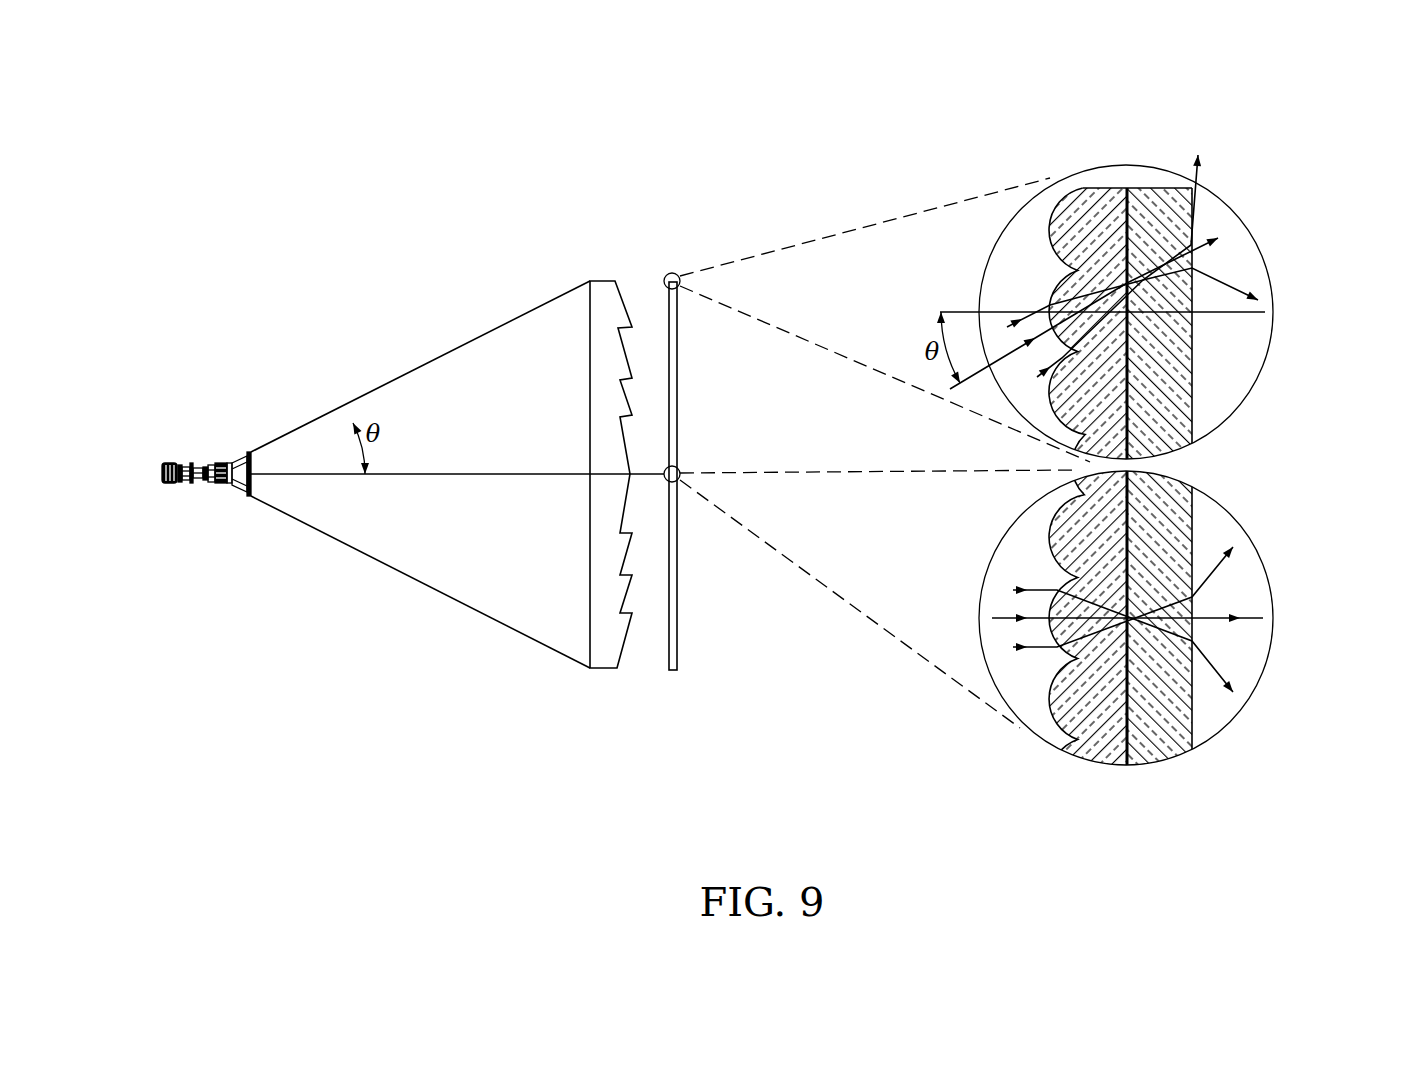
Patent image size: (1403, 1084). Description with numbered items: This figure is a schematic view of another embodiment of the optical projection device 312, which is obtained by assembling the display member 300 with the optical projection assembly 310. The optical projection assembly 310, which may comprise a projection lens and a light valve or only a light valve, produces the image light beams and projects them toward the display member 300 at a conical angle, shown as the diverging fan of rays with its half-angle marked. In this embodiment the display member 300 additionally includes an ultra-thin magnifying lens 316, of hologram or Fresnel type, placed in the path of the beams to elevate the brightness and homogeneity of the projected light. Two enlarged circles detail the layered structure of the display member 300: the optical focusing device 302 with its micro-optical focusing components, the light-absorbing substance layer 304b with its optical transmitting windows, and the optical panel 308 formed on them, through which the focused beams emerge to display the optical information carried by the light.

The display member 300 is at (685, 252).
The optical focusing device 302 is at (1068, 410).
The light-absorbing substance layer 304b is at (1127, 190).
The optical panel 308 is at (1157, 238).
The optical projection assembly 310 is at (160, 518).
The optical projection device 312 is at (214, 148).
The magnifying lens 316 is at (600, 638).